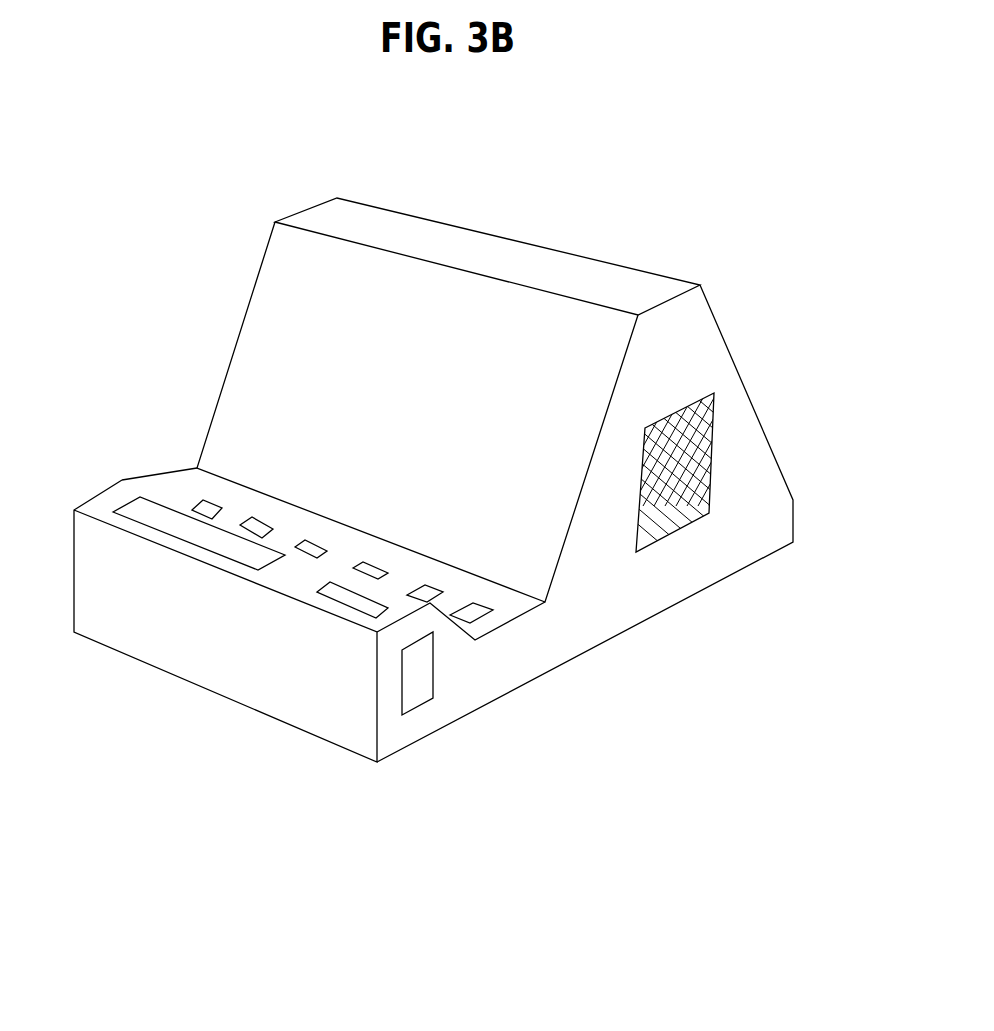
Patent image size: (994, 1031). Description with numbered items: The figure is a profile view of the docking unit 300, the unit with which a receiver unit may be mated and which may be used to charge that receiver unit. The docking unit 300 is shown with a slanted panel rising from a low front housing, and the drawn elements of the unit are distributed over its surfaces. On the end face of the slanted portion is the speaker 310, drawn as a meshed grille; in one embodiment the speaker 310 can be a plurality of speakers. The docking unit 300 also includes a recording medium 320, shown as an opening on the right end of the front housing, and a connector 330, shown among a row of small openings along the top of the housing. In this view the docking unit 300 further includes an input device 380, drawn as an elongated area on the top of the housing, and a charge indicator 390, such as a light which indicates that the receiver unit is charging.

The docking unit 300 is at (288, 353).
The speaker 310 is at (700, 488).
The recording medium 320 is at (423, 678).
The connector 330 is at (477, 615).
The input device 380 is at (172, 522).
The charge indicator 390 is at (341, 596).